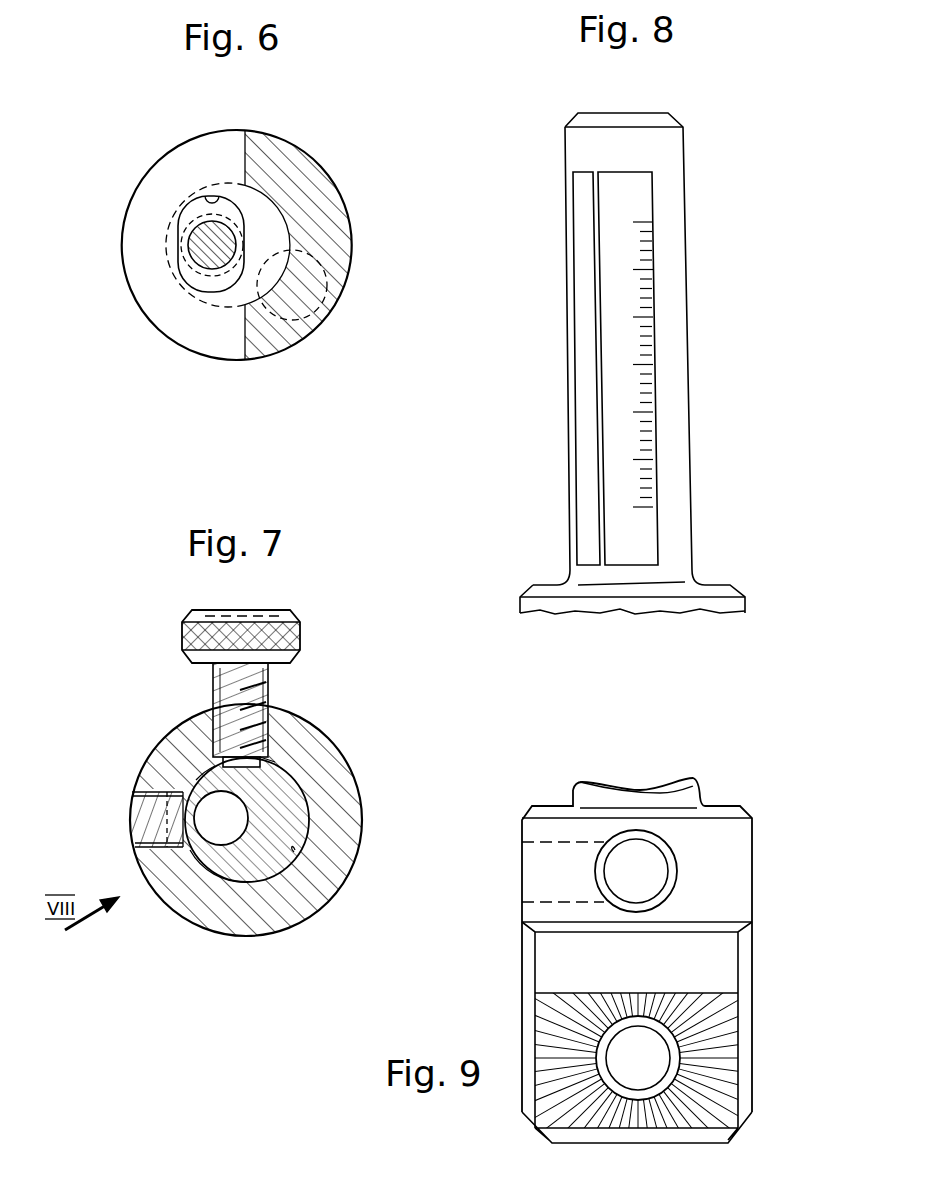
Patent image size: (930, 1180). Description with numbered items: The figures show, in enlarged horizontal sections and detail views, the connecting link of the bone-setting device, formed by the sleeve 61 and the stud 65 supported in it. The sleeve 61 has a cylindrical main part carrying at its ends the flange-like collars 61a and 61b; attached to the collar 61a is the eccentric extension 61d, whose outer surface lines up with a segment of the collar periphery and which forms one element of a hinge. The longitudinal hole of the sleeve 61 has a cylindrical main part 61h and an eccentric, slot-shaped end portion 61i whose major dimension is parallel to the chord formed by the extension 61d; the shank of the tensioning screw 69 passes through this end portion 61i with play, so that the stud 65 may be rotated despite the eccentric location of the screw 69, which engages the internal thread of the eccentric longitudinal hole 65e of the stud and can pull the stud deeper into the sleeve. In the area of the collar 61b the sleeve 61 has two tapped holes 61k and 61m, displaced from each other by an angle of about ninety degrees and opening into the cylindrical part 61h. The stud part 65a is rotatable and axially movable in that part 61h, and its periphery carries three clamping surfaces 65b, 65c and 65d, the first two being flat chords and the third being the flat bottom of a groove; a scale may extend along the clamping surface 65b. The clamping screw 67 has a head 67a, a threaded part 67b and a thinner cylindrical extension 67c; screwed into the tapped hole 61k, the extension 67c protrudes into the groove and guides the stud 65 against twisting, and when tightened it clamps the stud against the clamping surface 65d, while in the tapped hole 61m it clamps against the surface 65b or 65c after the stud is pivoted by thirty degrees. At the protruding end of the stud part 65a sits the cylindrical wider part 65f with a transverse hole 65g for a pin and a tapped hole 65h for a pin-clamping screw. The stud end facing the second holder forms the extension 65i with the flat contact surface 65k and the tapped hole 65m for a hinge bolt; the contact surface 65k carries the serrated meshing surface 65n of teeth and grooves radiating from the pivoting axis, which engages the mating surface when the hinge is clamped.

In FIG. 6, the sleeve 61 is at (331, 179).
In FIG. 7, the sleeve 61 is at (361, 836).
In FIG. 6, the collar 61a is at (150, 325).
In FIG. 7, the collar 61b is at (145, 764).
In FIG. 6, the extension 61d is at (345, 206).
In FIG. 6, the cylindrical main part of longitudinal hole 61h is at (320, 312).
In FIG. 7, the cylindrical main part of longitudinal hole 61h is at (295, 850).
In FIG. 6, the end portion of longitudinal hole 61i is at (210, 196).
In FIG. 7, the tapped hole 61k is at (268, 702).
In FIG. 7, the tapped hole 61m is at (152, 838).
In FIG. 8, the stud 65 is at (692, 518).
In FIG. 9, the stud 65 is at (703, 802).
In FIG. 7, the stud part 65a is at (336, 767).
In FIG. 8, the stud part 65a is at (690, 420).
In FIG. 7, the clamping surface 65b is at (198, 858).
In FIG. 8, the clamping surface 65b is at (612, 195).
In FIG. 7, the clamping surface 65c is at (210, 763).
In FIG. 8, the clamping surface 65c is at (576, 282).
In FIG. 7, the clamping surface 65d is at (273, 763).
In FIG. 7, the longitudinal hole 65e is at (227, 840).
In FIG. 8, the wider part 65f is at (518, 606).
In FIG. 9, the wider part 65f is at (754, 830).
In FIG. 9, the transverse hole 65g is at (656, 862).
In FIG. 9, the tapped hole 65h is at (557, 843).
In FIG. 9, the extension 65i is at (757, 993).
In FIG. 9, the contact surface 65k is at (733, 1078).
In FIG. 9, the tapped hole 65m is at (655, 1045).
In FIG. 9, the meshing surface 65n is at (730, 1110).
In FIG. 7, the clamping screw 67 is at (212, 690).
In FIG. 7, the head 67a is at (300, 627).
In FIG. 7, the threaded part 67b is at (270, 684).
In FIG. 7, the extension 67c is at (268, 762).
In FIG. 6, the tensioning screw 69 is at (196, 232).